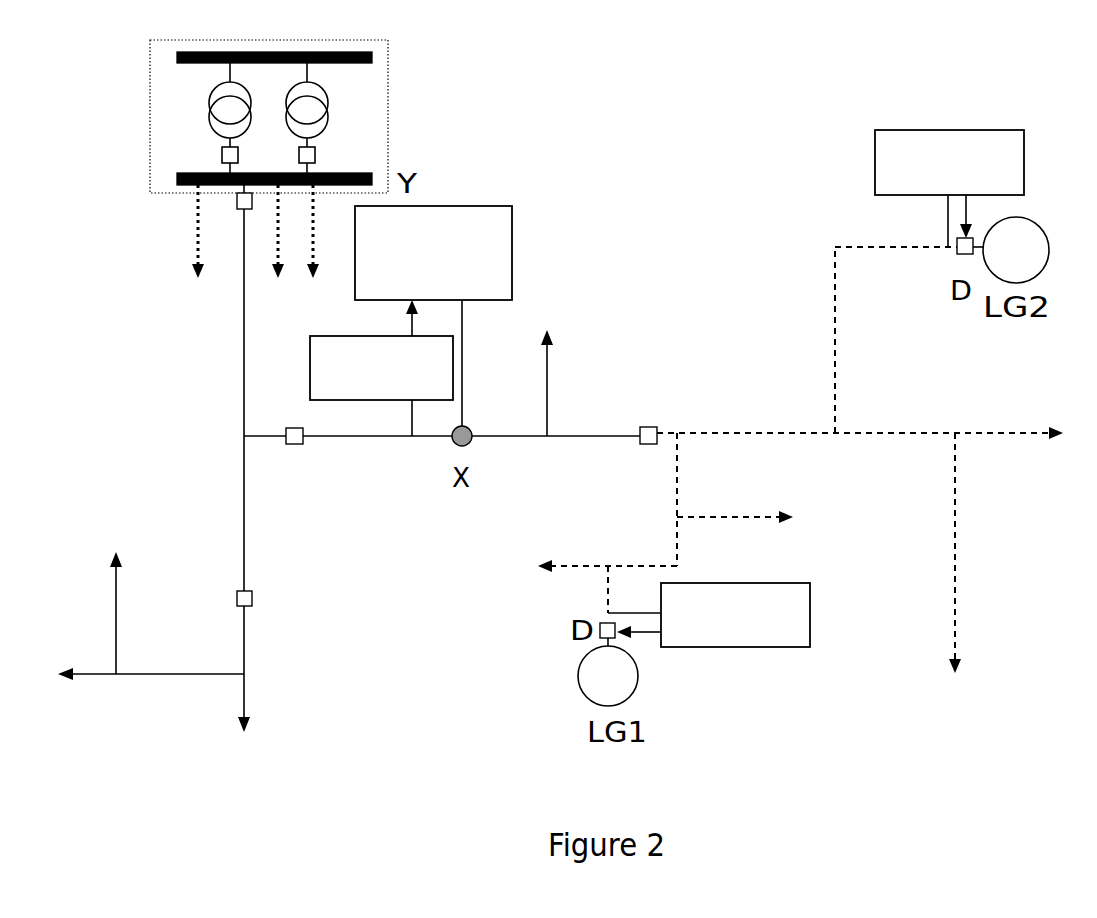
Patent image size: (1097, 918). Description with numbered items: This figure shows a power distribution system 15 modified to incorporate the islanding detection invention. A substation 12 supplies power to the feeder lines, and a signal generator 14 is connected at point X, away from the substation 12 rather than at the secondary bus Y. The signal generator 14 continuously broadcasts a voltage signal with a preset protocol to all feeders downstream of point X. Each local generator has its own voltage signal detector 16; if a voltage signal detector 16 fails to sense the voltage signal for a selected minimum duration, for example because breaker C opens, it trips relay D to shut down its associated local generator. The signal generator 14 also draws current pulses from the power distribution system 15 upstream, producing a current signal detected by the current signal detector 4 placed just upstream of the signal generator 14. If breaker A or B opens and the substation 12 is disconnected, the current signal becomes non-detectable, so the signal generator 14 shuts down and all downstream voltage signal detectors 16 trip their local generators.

The substation 12 is at (237, 116).
The signal generator 14 is at (512, 227).
The current signal detector 4 is at (330, 336).
The power distribution system 15 is at (692, 118).
The voltage signal detector 16 is at (750, 647).